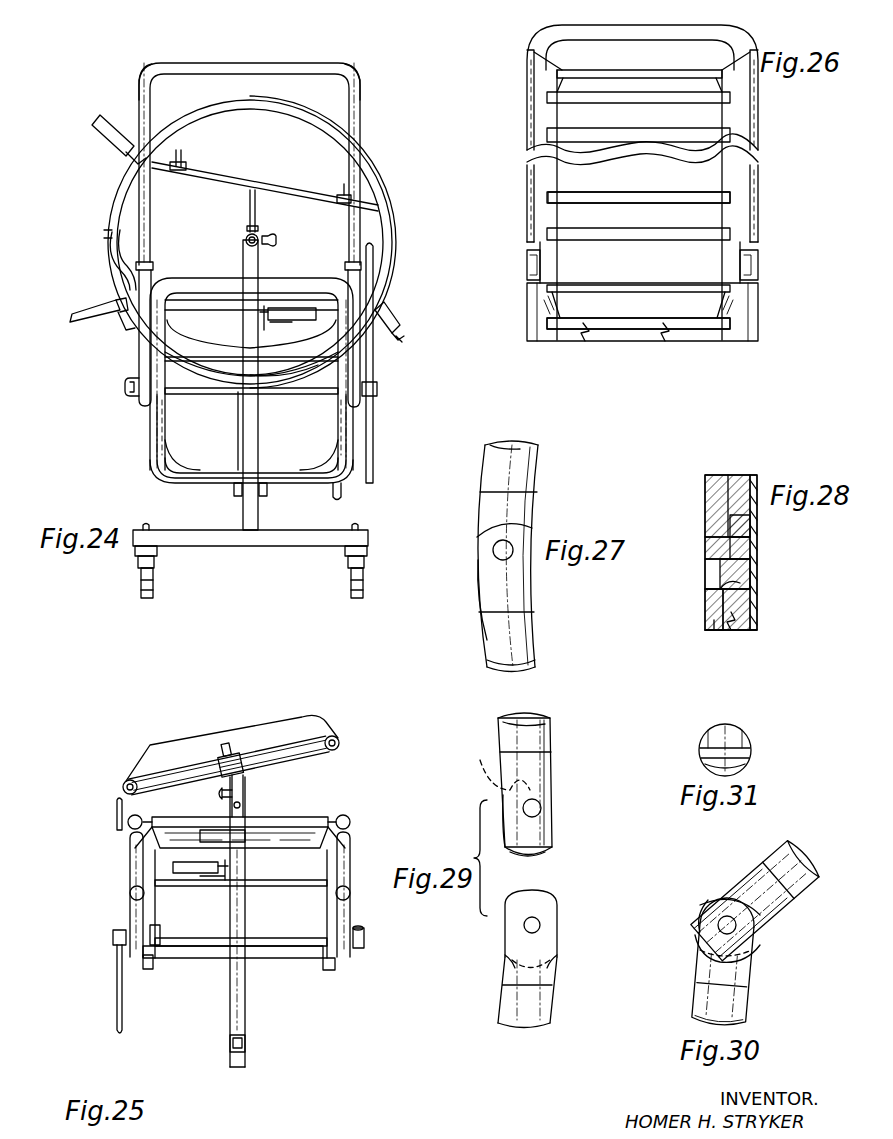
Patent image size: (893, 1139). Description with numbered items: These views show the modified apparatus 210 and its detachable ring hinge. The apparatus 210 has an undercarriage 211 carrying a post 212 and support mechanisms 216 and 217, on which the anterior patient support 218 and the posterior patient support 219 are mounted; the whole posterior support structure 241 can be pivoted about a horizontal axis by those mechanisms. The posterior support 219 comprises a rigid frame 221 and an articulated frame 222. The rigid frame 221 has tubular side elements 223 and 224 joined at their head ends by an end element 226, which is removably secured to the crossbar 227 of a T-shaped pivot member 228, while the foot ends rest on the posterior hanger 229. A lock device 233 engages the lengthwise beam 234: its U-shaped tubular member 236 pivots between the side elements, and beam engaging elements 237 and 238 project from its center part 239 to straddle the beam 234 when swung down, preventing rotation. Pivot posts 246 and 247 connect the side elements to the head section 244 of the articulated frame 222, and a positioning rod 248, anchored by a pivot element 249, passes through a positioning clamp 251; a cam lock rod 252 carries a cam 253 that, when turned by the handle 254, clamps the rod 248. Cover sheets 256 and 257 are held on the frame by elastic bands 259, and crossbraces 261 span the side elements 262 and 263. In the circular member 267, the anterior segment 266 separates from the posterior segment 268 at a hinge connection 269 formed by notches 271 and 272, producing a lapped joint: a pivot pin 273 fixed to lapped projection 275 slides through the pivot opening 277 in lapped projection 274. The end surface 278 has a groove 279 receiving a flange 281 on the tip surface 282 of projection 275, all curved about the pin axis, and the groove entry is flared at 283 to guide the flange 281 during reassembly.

In FIG. 24, the modified apparatus 210 is at (98, 82).
In FIG. 24, the undercarriage 211 is at (225, 548).
In FIG. 25, the undercarriage 211 is at (249, 1056).
In FIG. 24, the post 212 is at (243, 518).
In FIG. 25, the post 212 is at (246, 1018).
In FIG. 24, the support mechanism 216 is at (385, 314).
In FIG. 24, the support mechanism 217 is at (240, 232).
In FIG. 25, the support mechanism 217 is at (244, 796).
In FIG. 25, the anterior patient support 218 is at (338, 742).
In FIG. 25, the posterior patient support 219 is at (350, 812).
In FIG. 24, the rigid frame 221 is at (142, 352).
In FIG. 25, the rigid frame 221 is at (364, 938).
In FIG. 24, the articulated frame 222 is at (144, 190).
In FIG. 25, the articulated frame 222 is at (352, 826).
In FIG. 24, the side element 223 is at (136, 400).
In FIG. 25, the side element 223 is at (135, 916).
In FIG. 24, the side element 224 is at (356, 350).
In FIG. 25, the side element 224 is at (350, 914).
In FIG. 24, the end element 226 is at (218, 266).
In FIG. 25, the end element 226 is at (160, 838).
In FIG. 24, the crossbar 227 is at (260, 238).
In FIG. 25, the crossbar 227 is at (230, 805).
In FIG. 24, the T-shaped pivot member 228 is at (243, 239).
In FIG. 25, the T-shaped pivot member 228 is at (249, 806).
In FIG. 24, the posterior hanger 229 is at (126, 248).
In FIG. 24, the lock device 233 is at (182, 465).
In FIG. 25, the lengthwise beam 234 is at (232, 1050).
In FIG. 24, the U-shaped tubular member 236 is at (178, 485).
In FIG. 24, the beam engaging element 237 is at (248, 505).
In FIG. 24, the beam engaging element 238 is at (275, 480).
In FIG. 24, the center part 239 is at (236, 468).
In FIG. 24, the posterior support structure 241 is at (110, 160).
In FIG. 25, the posterior support structure 241 is at (358, 962).
In FIG. 24, the head section 244 is at (296, 63).
In FIG. 25, the head section 244 is at (312, 818).
In FIG. 25, the pivot post 246 is at (152, 966).
In FIG. 25, the pivot post 247 is at (330, 968).
In FIG. 24, the positioning rod 248 is at (343, 497).
In FIG. 25, the pivot element 249 is at (145, 822).
In FIG. 25, the positioning clamp 251 is at (160, 932).
In FIG. 24, the cam lock rod 252 is at (312, 392).
In FIG. 25, the cam lock rod 252 is at (258, 942).
In FIG. 25, the cam 253 is at (148, 942).
In FIG. 24, the handle 254 is at (374, 416).
In FIG. 25, the handle 254 is at (117, 992).
In FIG. 26, the cover sheet 256 is at (740, 138).
In FIG. 26, the cover sheet 257 is at (740, 326).
In FIG. 26, the elastic band 259 is at (710, 200).
In FIG. 24, the crossbrace 261 is at (225, 308).
In FIG. 25, the crossbrace 261 is at (312, 852).
In FIG. 24, the side element 262 is at (139, 78).
In FIG. 24, the side element 263 is at (356, 88).
In FIG. 24, the anterior segment 266 is at (366, 160).
In FIG. 27, the anterior segment 266 is at (540, 462).
In FIG. 28, the anterior segment 266 is at (750, 475).
In FIG. 29, the anterior segment 266 is at (550, 745).
In FIG. 24, the circular member 267 is at (398, 240).
In FIG. 24, the posterior segment 268 is at (388, 277).
In FIG. 27, the posterior segment 268 is at (532, 648).
In FIG. 28, the posterior segment 268 is at (757, 631).
In FIG. 29, the posterior segment 268 is at (550, 1012).
In FIG. 24, the hinge connection 269 is at (396, 258).
In FIG. 27, the hinge connection 269 is at (470, 570).
In FIG. 28, the hinge connection 269 is at (700, 486).
In FIG. 30, the hinge connection 269 is at (728, 890).
In FIG. 28, the notch 271 is at (728, 592).
In FIG. 28, the notch 272 is at (728, 526).
In FIG. 29, the notch 272 is at (500, 787).
In FIG. 27, the pivot pin 273 is at (510, 555).
In FIG. 28, the pivot pin 273 is at (757, 554).
In FIG. 29, the pivot pin 273 is at (540, 805).
In FIG. 30, the pivot pin 273 is at (745, 924).
In FIG. 27, the lapped projection 274 is at (497, 532).
In FIG. 28, the lapped projection 274 is at (756, 534).
In FIG. 29, the lapped projection 274 is at (530, 900).
In FIG. 30, the lapped projection 274 is at (712, 902).
In FIG. 28, the lapped projection 275 is at (712, 572).
In FIG. 29, the lapped projection 275 is at (548, 828).
In FIG. 31, the lapped projection 275 is at (720, 730).
In FIG. 30, the lapped projection 275 is at (705, 928).
In FIG. 28, the pivot opening 277 is at (748, 562).
In FIG. 29, the pivot opening 277 is at (540, 922).
In FIG. 28, the end surface 278 is at (719, 586).
In FIG. 29, the end surface 278 is at (545, 955).
In FIG. 31, the end surface 278 is at (735, 766).
In FIG. 28, the groove 279 is at (746, 602).
In FIG. 29, the groove 279 is at (508, 958).
In FIG. 31, the groove 279 is at (748, 748).
In FIG. 28, the flange 281 is at (722, 598).
In FIG. 29, the flange 281 is at (535, 853).
In FIG. 30, the flange 281 is at (692, 942).
In FIG. 28, the tip surface 282 is at (715, 628).
In FIG. 29, the tip surface 282 is at (530, 853).
In FIG. 30, the tip surface 282 is at (700, 953).
In FIG. 29, the flared entry 283 is at (508, 976).
In FIG. 31, the flared entry 283 is at (706, 762).
In FIG. 30, the flared entry 283 is at (708, 964).